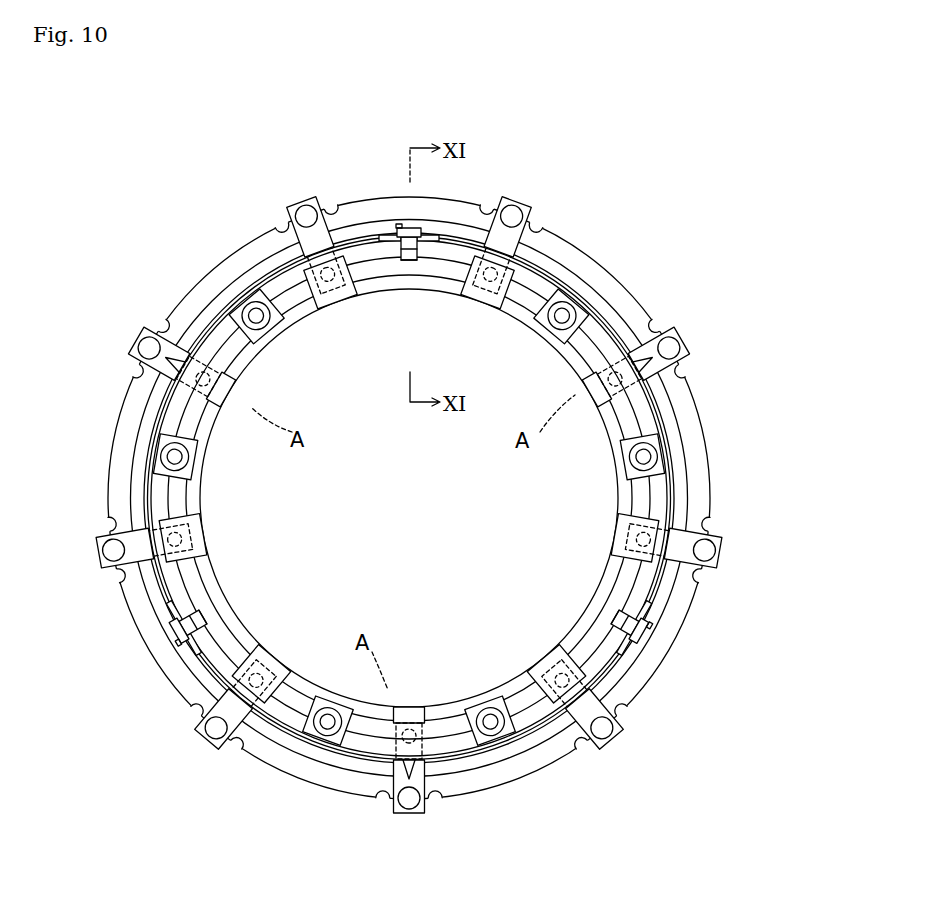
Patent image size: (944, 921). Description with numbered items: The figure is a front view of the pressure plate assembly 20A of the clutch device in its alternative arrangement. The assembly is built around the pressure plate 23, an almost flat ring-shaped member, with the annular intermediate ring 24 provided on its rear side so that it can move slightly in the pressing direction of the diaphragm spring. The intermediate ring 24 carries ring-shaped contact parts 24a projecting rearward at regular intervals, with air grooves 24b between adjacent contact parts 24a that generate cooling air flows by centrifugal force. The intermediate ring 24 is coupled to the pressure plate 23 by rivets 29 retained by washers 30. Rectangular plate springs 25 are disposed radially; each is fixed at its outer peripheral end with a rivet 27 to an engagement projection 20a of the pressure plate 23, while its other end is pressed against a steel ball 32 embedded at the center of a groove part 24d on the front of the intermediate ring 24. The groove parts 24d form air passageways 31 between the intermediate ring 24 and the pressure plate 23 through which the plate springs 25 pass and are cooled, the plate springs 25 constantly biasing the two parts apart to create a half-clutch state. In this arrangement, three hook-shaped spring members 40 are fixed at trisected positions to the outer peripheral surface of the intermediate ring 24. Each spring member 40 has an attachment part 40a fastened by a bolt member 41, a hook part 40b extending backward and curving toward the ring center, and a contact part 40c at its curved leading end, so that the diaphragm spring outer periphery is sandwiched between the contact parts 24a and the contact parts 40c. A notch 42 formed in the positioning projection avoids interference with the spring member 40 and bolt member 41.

The pressure plate assembly 20A is at (600, 146).
The engagement projection 20a is at (680, 322).
The pressure plate 23 is at (615, 272).
The intermediate ring 24 is at (541, 271).
The contact part 24a is at (407, 287).
The air groove 24b is at (548, 325).
The groove part 24d is at (222, 382).
The plate spring 25 is at (688, 370).
The rivet 27 is at (680, 345).
The rivet 29 is at (553, 330).
The washer 30 is at (562, 322).
The air passageway 31 is at (193, 330).
The steel ball 32 is at (619, 360).
The spring member 40 is at (404, 227).
The attachment part 40a is at (400, 236).
The hook part 40b is at (406, 262).
The contact part 40c is at (416, 252).
The bolt member 41 is at (438, 236).
The notch 42 is at (398, 226).